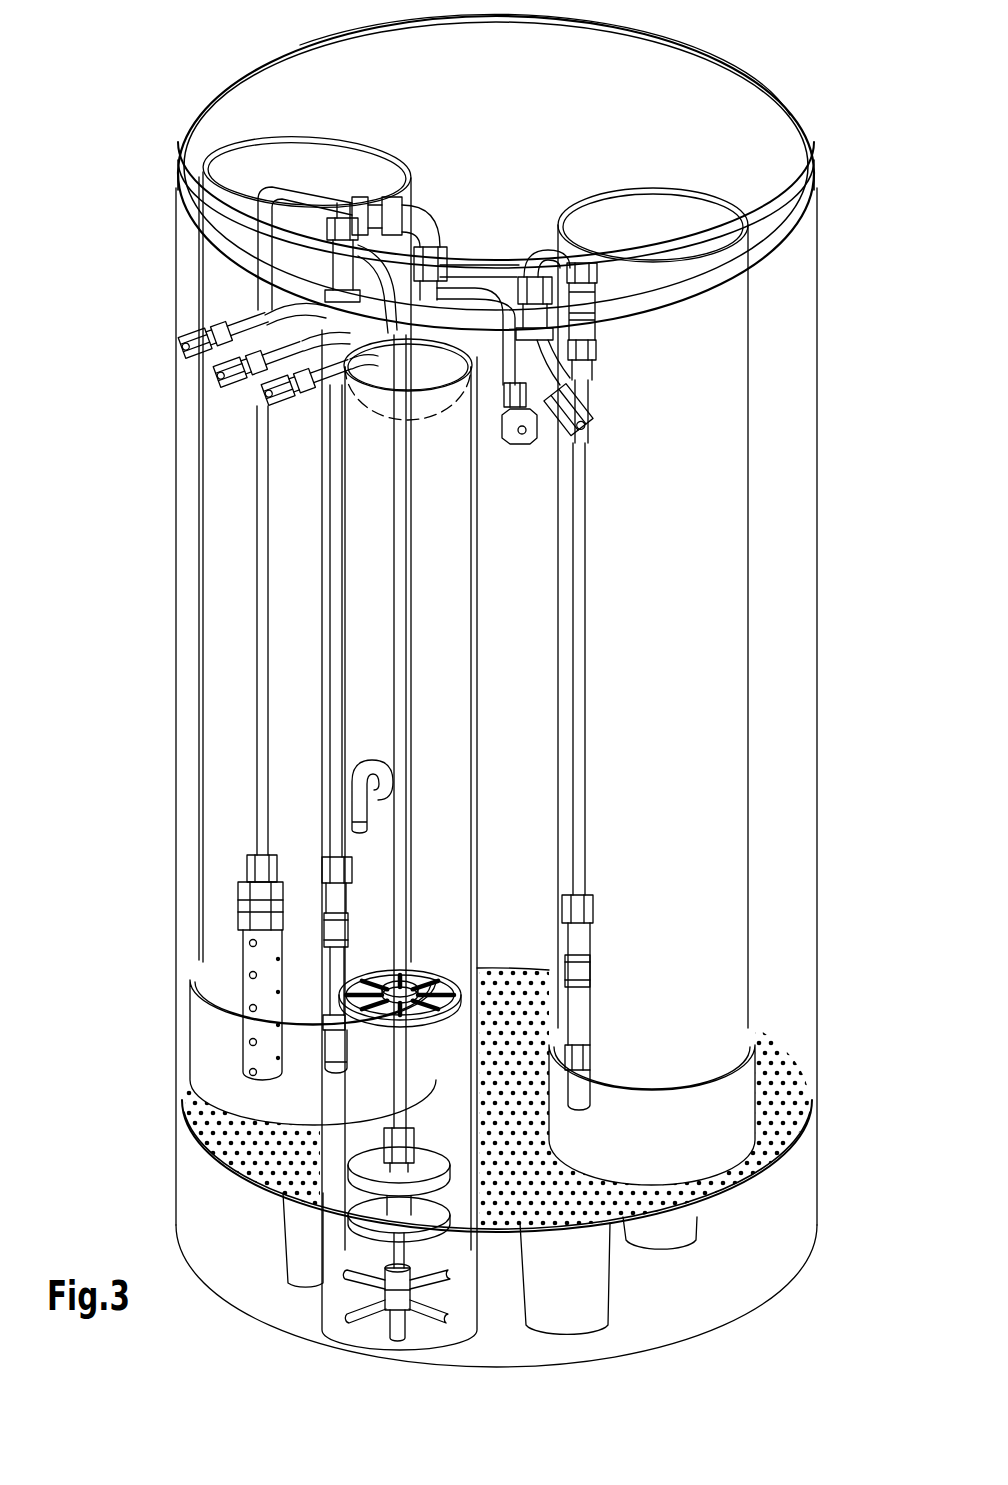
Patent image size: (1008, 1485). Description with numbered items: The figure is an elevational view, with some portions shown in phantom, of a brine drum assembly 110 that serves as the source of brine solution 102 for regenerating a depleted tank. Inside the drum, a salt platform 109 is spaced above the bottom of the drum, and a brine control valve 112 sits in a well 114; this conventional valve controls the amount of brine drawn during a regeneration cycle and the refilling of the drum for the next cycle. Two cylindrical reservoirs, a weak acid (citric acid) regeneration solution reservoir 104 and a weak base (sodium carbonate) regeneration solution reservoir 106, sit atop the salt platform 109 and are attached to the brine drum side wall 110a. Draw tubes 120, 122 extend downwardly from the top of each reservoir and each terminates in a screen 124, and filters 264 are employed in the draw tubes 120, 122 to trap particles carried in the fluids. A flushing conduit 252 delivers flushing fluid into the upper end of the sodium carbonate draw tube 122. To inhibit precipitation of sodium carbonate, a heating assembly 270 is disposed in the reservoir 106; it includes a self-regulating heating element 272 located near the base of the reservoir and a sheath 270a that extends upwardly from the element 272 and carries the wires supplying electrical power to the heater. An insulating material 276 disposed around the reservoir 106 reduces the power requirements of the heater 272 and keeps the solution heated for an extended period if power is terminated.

The source of brine solution 102 is at (803, 1190).
The weak acid regeneration solution reservoir 104 is at (690, 754).
The weak base regeneration solution reservoir 106 is at (315, 631).
The salt platform 109 is at (788, 1092).
The brine drum assembly 110 is at (784, 96).
The brine drum side wall 110a is at (783, 365).
The brine control valve 112 is at (403, 1219).
The well 114 is at (465, 814).
The draw tube 120 is at (581, 676).
The draw tube 122 is at (222, 387).
The screen 124 is at (336, 1062).
The flushing conduit 252 is at (192, 368).
The filter 264 is at (320, 313).
The heating assembly 270 is at (240, 708).
The sheath 270a is at (258, 497).
The heating element 272 is at (242, 944).
The insulating material 276 is at (410, 198).